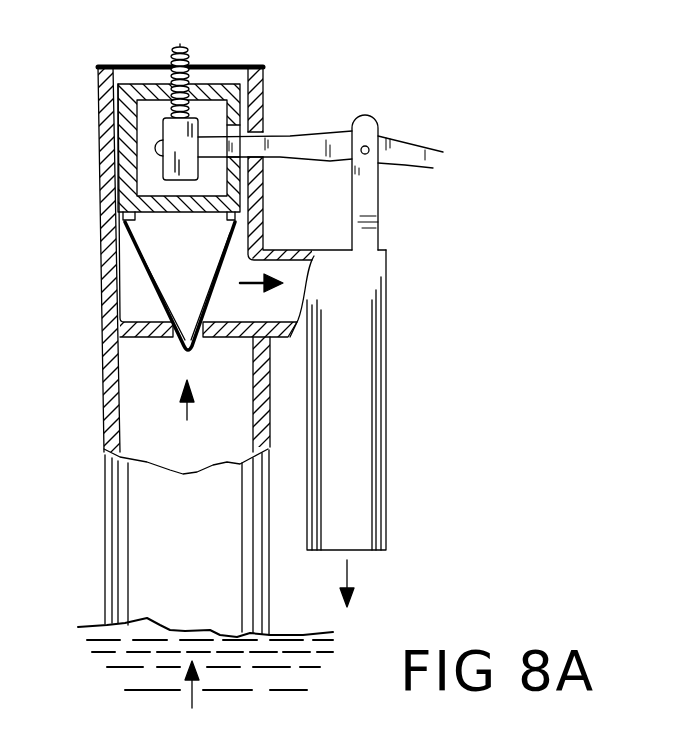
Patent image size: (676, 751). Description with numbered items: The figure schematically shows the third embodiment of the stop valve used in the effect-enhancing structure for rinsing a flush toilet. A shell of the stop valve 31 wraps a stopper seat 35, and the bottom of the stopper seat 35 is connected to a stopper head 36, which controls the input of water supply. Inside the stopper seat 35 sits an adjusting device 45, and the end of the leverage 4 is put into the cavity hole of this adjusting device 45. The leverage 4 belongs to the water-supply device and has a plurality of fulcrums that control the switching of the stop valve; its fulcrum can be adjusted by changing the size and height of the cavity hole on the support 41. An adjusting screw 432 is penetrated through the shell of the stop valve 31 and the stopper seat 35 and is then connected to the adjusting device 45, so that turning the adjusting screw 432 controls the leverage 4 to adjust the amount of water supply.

The shell of the stop valve 31 is at (110, 70).
The adjusting screw 432 is at (182, 46).
The stopper seat 35 is at (122, 108).
The adjusting device 45 is at (160, 136).
The leverage 4 is at (287, 136).
The support 41 is at (377, 242).
The stopper head 36 is at (147, 280).